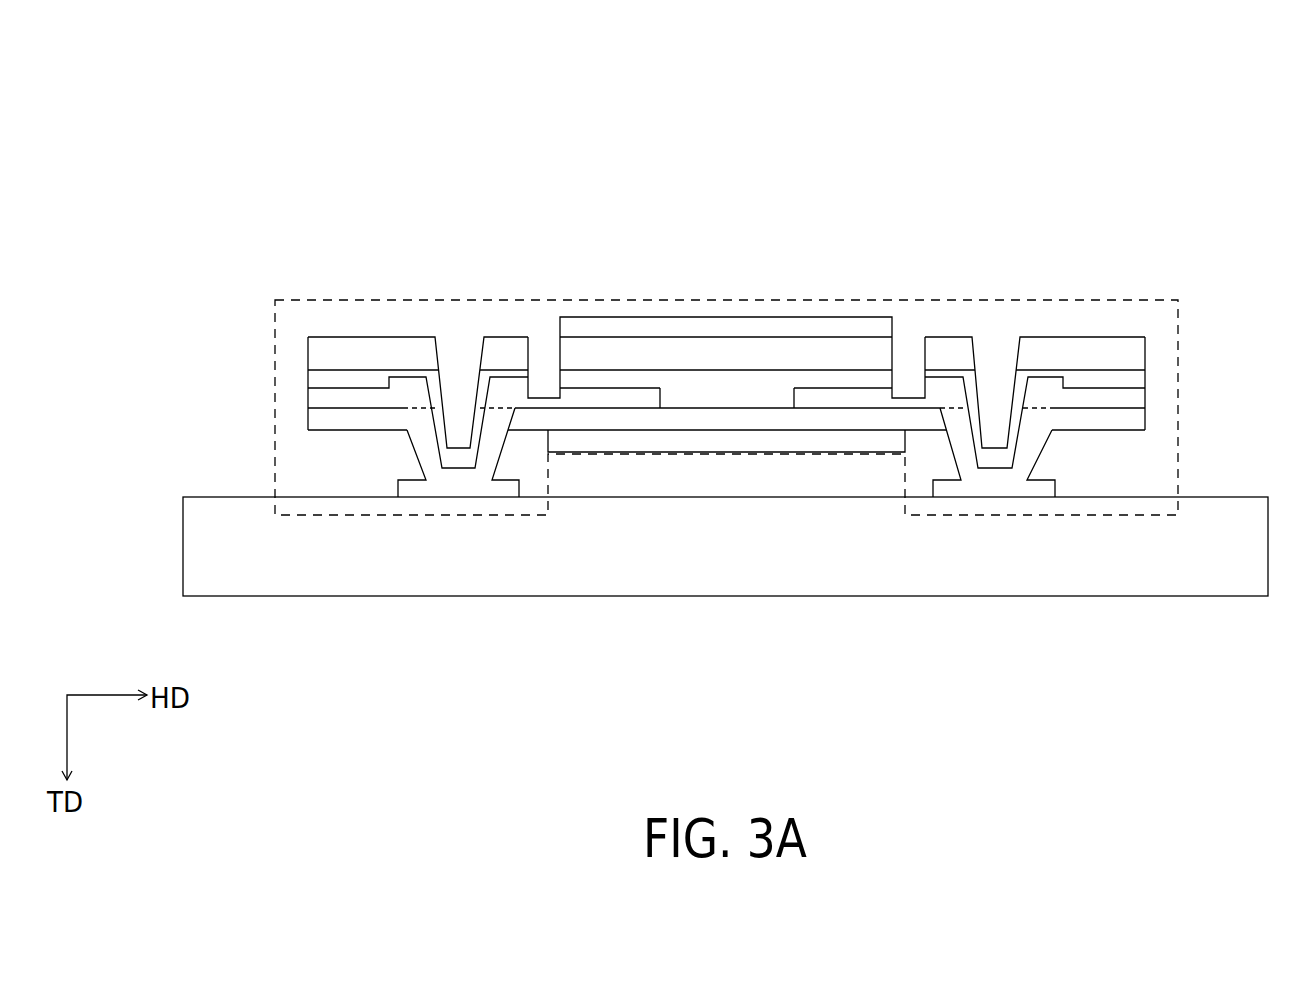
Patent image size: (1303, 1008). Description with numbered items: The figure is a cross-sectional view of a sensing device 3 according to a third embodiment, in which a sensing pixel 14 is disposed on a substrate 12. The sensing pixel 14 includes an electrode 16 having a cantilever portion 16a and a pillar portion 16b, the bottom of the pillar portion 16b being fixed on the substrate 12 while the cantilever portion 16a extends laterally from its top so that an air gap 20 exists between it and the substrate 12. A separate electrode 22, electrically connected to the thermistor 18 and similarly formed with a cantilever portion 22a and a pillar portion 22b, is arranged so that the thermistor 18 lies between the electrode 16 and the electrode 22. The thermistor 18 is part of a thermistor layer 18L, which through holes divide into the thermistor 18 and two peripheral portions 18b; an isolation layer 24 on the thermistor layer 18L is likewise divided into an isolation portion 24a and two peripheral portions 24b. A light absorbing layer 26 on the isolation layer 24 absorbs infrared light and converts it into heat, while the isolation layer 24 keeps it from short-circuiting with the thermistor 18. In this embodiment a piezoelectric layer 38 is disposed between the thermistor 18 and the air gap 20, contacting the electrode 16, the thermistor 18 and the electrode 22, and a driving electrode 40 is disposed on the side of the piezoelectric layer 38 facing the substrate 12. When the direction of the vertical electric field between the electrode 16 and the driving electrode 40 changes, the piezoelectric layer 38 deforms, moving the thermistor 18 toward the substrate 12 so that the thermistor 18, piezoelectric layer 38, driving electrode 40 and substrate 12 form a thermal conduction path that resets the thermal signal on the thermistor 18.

The sensing device 3 is at (1220, 117).
The substrate 12 is at (1210, 562).
The sensing pixel 14 is at (1178, 363).
The electrode 16 is at (950, 238).
The cantilever portion 16a is at (857, 398).
The pillar portion 16b is at (958, 438).
The thermistor 18 is at (705, 390).
The thermistor layer 18L is at (302, 379).
The peripheral portions 18b is at (348, 382).
The air gap 20 is at (923, 470).
The electrode 22 is at (578, 665).
The cantilever portion 22a is at (577, 398).
The pillar portion 22b is at (490, 443).
The isolation layer 24 is at (302, 353).
The isolation portion 24a is at (608, 355).
The peripheral portions 24b is at (499, 355).
The light absorbing layer 26 is at (774, 326).
The piezoelectric layer 38 is at (803, 418).
The driving electrode 40 is at (669, 439).